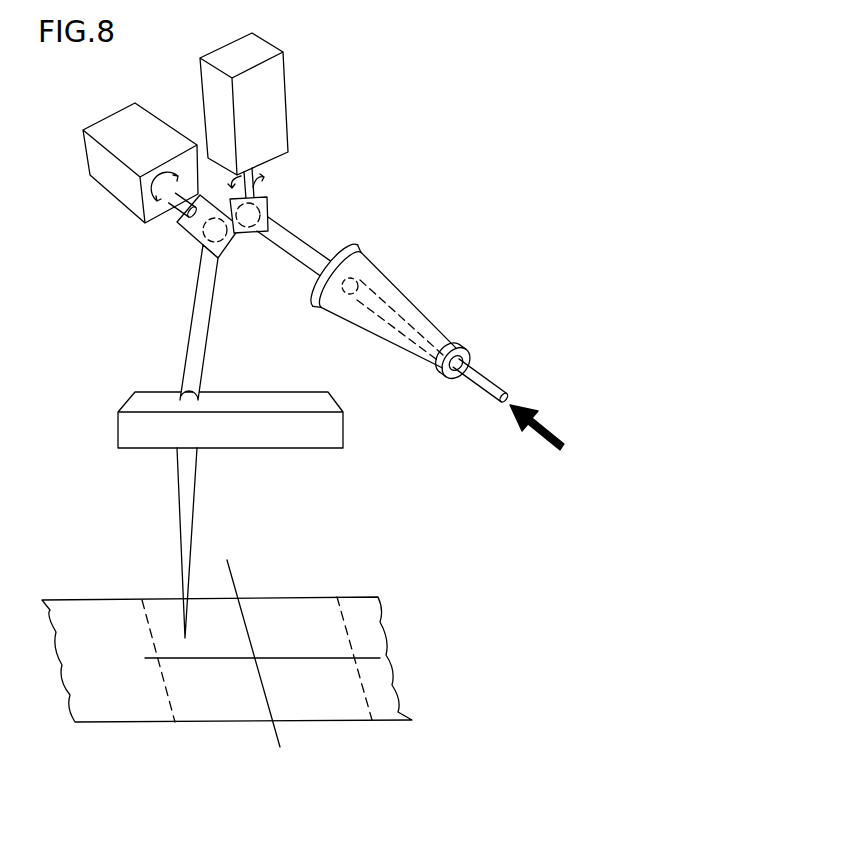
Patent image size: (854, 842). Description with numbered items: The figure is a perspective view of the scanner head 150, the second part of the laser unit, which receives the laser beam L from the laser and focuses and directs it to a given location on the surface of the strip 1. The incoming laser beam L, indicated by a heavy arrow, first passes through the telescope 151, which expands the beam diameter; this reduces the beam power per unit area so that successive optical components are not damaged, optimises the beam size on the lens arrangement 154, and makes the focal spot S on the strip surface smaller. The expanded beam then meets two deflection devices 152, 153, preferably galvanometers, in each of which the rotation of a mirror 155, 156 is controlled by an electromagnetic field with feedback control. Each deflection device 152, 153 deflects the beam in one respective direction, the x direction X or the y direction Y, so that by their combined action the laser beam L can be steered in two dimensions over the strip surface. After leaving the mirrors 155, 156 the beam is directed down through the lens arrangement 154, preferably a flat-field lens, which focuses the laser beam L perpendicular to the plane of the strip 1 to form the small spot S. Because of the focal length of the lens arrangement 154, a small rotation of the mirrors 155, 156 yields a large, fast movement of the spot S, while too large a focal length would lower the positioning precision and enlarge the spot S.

The scanner head 150 is at (448, 131).
The telescope 151 is at (398, 303).
The deflection device 152 is at (270, 93).
The deflection device 153 is at (108, 129).
The lens arrangement 154 is at (287, 407).
The mirror 155 is at (270, 203).
The mirror 156 is at (190, 233).
The strip 1 is at (368, 632).
The laser beam L is at (508, 398).
The spot S is at (184, 638).
The x direction X is at (257, 669).
The y direction Y is at (258, 651).